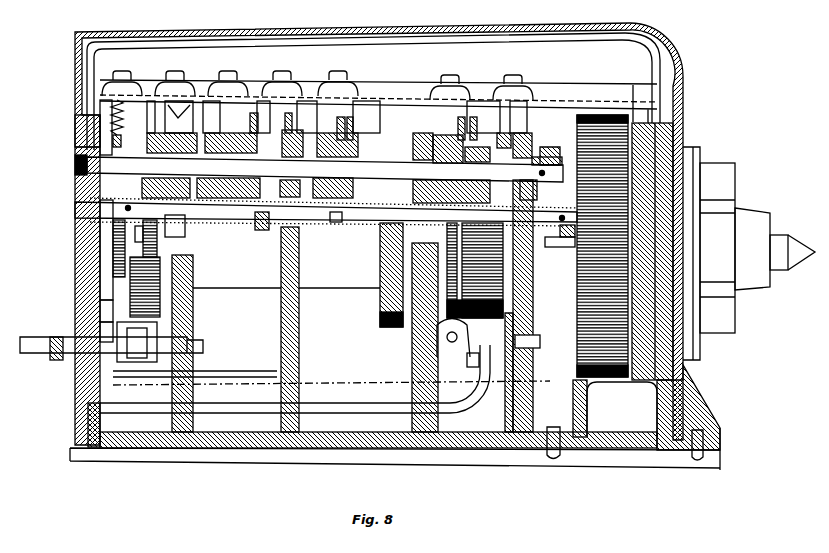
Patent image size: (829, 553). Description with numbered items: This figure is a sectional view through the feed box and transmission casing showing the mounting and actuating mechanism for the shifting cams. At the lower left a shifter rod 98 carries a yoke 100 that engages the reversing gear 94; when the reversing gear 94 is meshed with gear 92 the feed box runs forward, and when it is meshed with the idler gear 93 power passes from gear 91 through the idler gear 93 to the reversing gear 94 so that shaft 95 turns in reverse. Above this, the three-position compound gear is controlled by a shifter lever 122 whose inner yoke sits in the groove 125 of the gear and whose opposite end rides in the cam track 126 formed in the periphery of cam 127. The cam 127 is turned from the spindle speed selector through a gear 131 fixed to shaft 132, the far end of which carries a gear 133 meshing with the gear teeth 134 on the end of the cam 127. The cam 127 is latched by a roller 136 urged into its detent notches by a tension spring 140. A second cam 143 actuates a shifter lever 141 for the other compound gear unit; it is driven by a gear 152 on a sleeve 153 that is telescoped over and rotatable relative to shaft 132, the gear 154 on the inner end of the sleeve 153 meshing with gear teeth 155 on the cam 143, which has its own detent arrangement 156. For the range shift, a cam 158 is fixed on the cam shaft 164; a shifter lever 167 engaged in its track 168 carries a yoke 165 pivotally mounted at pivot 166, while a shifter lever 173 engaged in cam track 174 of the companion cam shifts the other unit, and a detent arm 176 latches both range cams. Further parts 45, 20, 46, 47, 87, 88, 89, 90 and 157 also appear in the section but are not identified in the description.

The housing 45 is at (645, 25).
The liner 20 is at (677, 105).
The groove 125 is at (174, 71).
The cam 127 is at (150, 130).
The shifter lever 122 is at (178, 118).
The shifter lever 141 is at (218, 110).
The cam 143 is at (253, 113).
The detent arrangement 156 is at (282, 138).
The shifter lever 167 is at (352, 110).
The shifter lever 173 is at (458, 129).
The detent arm 176 is at (497, 136).
The yoke 165 is at (546, 147).
The gear teeth 155 is at (152, 148).
The cam track 126 is at (182, 148).
The track 168 is at (357, 143).
The cam 158 is at (412, 146).
The pivot 166 is at (433, 150).
The cam track 174 is at (451, 183).
The cam shaft 164 is at (434, 172).
The shaft 132 is at (358, 226).
The sleeve 153 is at (340, 226).
The idler gear 93 is at (193, 273).
The partition 47 is at (282, 316).
The ledge 88 is at (330, 288).
The bolt 87 is at (470, 345).
The gear 89 is at (382, 302).
The gear 90 is at (579, 292).
The gear 91 is at (162, 248).
The yoke 100 is at (160, 335).
The shifter rod 98 is at (50, 358).
The spindle housing 46 is at (81, 288).
The tension spring 140 is at (110, 104).
The block 157 is at (100, 124).
The roller 136 is at (148, 100).
The gear 92 is at (100, 247).
The reversing gear 94 is at (77, 311).
The shaft 95 is at (78, 324).
The gear teeth 134 is at (185, 232).
The gear 133 is at (143, 238).
The gear 154 is at (260, 231).
The gear 152 is at (568, 237).
The gear 131 is at (570, 248).